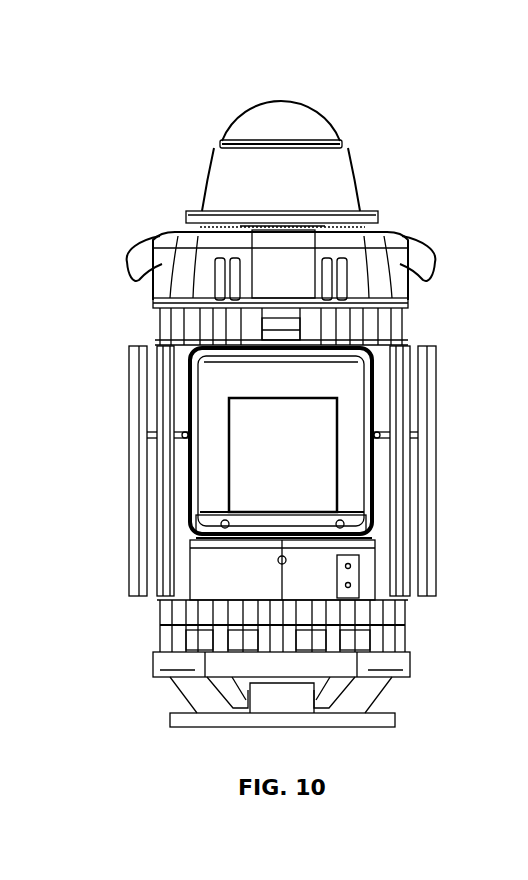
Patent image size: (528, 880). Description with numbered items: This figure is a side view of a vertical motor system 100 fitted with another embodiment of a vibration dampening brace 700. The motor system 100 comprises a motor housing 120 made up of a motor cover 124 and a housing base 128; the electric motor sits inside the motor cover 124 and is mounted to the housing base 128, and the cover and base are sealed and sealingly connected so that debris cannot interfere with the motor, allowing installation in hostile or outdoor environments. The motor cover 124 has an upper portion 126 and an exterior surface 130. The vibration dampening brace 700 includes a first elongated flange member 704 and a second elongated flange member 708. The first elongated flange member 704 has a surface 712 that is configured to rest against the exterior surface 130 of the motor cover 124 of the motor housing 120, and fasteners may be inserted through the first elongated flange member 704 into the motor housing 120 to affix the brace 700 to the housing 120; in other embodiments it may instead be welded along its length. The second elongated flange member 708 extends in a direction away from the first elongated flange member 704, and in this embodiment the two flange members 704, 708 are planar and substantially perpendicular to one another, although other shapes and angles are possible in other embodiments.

The vertical motor system 100 is at (203, 126).
The motor housing 120 is at (140, 650).
The motor cover 124 is at (218, 584).
The upper portion 126 is at (378, 258).
The housing base 128 is at (162, 665).
The exterior surface 130 is at (392, 533).
The vibration dampening brace 700 is at (452, 484).
The first elongated flange member 704 is at (419, 355).
The second elongated flange member 708 is at (432, 357).
The surface 712 is at (408, 559).